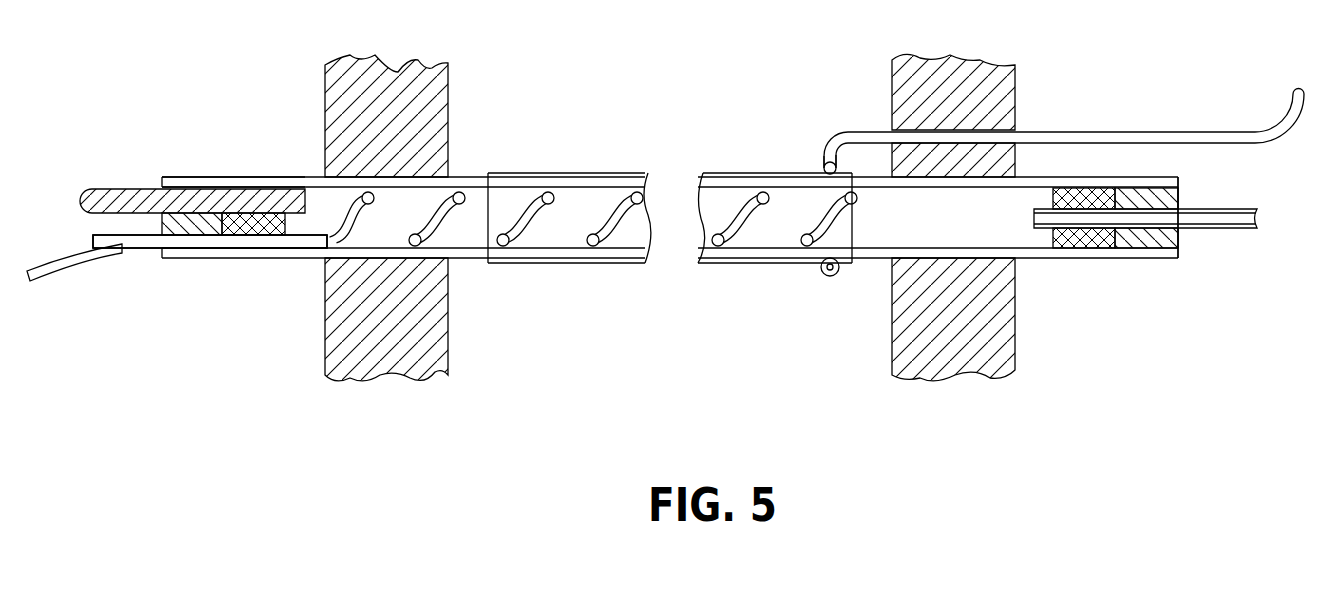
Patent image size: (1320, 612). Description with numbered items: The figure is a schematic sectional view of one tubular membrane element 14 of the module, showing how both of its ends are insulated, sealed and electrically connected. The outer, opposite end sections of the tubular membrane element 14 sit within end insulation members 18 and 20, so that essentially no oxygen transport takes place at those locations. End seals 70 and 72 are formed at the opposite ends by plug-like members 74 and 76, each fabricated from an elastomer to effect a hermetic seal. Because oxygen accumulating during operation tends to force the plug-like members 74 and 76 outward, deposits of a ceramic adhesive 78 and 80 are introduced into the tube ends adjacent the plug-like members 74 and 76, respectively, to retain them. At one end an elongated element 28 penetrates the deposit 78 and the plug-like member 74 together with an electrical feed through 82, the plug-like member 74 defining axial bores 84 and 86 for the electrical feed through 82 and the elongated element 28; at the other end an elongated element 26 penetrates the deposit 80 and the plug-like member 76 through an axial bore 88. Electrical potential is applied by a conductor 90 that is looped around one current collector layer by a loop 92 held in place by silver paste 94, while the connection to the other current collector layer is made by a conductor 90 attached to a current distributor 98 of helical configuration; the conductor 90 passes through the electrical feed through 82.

The tubular membrane element 14 is at (700, 92).
The end insulation member 18 is at (340, 358).
The end insulation member 20 is at (1005, 358).
The elongated element 26 is at (1227, 230).
The elongated element 28 is at (122, 200).
The end seal 70 is at (127, 221).
The end seal 72 is at (1200, 179).
The plug-like member 74 is at (250, 222).
The plug-like member 76 is at (1095, 205).
The ceramic adhesive deposit 78 is at (193, 220).
The ceramic adhesive deposit 80 is at (1150, 240).
The electrical feed through 82 is at (155, 248).
The axial bore 84 is at (268, 243).
The axial bore 86 is at (258, 192).
The axial bore 88 is at (1063, 226).
The conductor 90 is at (60, 273).
The loop 92 is at (830, 273).
The silver paste 94 is at (822, 167).
The current distributor 98 is at (513, 203).